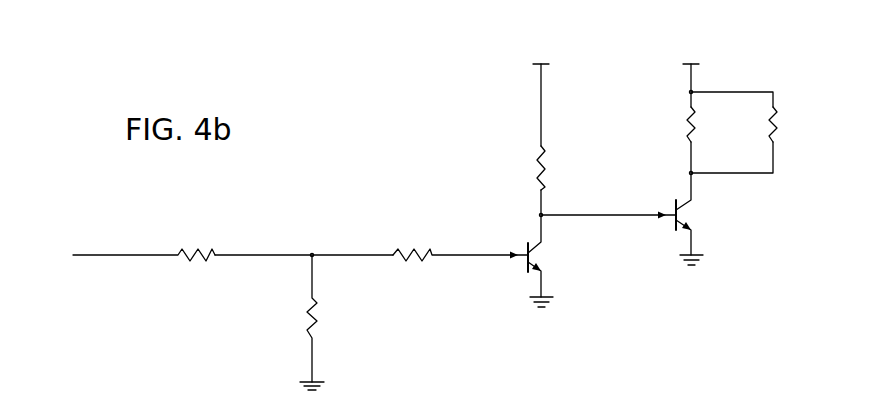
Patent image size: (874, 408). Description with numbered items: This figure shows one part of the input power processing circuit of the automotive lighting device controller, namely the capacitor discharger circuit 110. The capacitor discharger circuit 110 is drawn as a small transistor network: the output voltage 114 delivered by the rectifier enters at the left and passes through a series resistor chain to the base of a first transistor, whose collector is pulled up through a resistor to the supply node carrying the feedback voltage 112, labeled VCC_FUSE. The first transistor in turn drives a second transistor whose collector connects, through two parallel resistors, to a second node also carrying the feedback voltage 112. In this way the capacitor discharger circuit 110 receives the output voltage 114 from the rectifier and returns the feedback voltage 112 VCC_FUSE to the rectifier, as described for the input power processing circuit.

The capacitor discharger circuit 110 is at (442, 99).
The feedback voltage 112 is at (614, 40).
The output voltage 114 is at (132, 243).